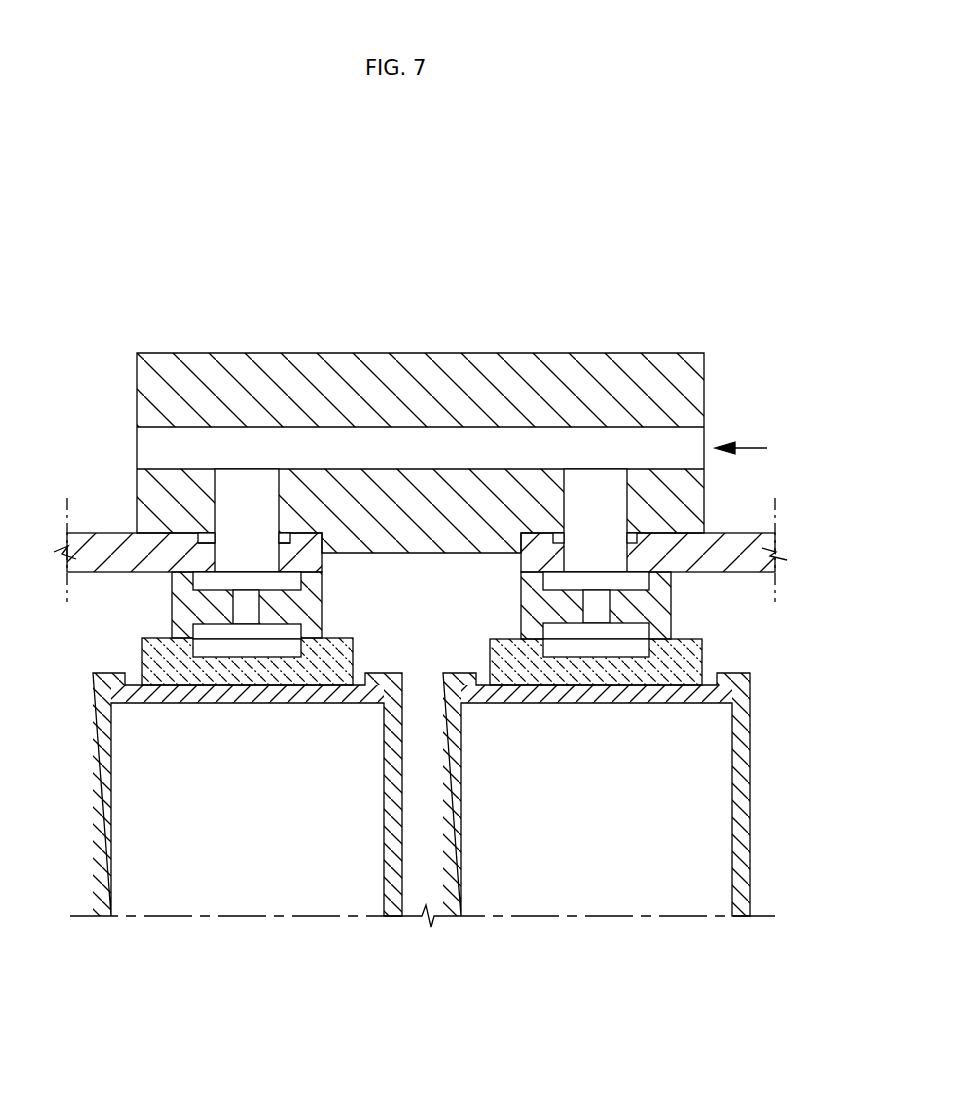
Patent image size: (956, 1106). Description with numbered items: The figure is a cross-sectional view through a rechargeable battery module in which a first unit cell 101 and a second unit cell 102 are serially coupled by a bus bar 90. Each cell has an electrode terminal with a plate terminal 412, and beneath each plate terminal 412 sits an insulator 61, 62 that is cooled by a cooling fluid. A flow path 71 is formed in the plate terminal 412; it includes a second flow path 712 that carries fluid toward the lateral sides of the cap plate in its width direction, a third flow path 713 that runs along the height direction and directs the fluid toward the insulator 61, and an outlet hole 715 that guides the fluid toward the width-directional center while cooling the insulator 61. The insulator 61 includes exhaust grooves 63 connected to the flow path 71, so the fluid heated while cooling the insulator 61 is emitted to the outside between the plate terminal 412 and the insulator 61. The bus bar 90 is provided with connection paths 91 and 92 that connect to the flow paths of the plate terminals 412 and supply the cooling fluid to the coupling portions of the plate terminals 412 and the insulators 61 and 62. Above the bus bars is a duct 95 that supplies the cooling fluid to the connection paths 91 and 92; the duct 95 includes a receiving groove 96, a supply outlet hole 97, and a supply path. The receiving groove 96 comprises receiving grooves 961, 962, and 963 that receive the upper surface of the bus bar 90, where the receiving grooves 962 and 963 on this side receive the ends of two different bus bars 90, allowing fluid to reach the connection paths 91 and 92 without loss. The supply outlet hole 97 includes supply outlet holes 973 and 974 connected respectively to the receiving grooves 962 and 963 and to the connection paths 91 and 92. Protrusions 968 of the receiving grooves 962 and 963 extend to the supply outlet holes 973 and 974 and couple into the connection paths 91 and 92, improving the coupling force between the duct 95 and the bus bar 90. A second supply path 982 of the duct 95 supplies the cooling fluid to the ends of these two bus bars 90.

The flow path 71 is at (378, 429).
The second flow path 712 is at (360, 588).
The third flow path 713 is at (368, 612).
The outlet hole 715 is at (378, 468).
The duct 95 is at (439, 383).
The receiving groove 96 is at (420, 374).
The receiving groove 961 is at (420, 314).
The receiving groove 962 is at (330, 545).
The receiving groove 963 is at (520, 545).
The second supply path 982 is at (405, 443).
The supply outlet hole 97 is at (478, 404).
The supply outlet hole 973 is at (243, 493).
The supply outlet hole 974 is at (598, 492).
The bus bar 90 is at (738, 540).
The connection path 91 is at (210, 540).
The connection path 92 is at (607, 540).
The protrusion 968 is at (205, 540).
The plate terminal 412 is at (178, 592).
The insulator 61 is at (143, 660).
The insulator 62 is at (702, 660).
The exhaust groove 63 is at (200, 648).
The first unit cell 101 is at (273, 900).
The second unit cell 102 is at (595, 900).